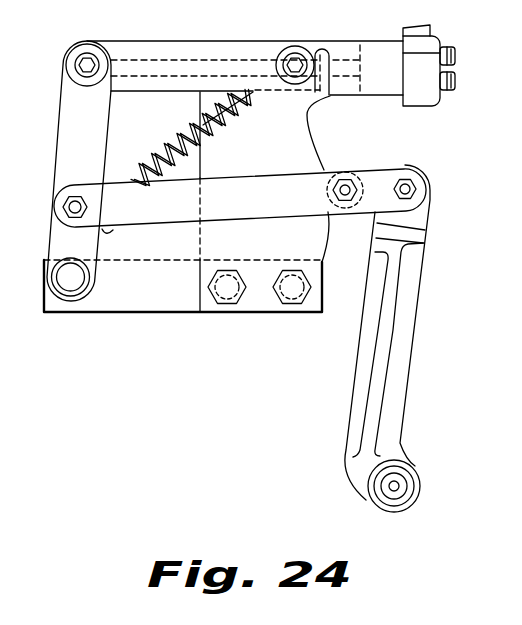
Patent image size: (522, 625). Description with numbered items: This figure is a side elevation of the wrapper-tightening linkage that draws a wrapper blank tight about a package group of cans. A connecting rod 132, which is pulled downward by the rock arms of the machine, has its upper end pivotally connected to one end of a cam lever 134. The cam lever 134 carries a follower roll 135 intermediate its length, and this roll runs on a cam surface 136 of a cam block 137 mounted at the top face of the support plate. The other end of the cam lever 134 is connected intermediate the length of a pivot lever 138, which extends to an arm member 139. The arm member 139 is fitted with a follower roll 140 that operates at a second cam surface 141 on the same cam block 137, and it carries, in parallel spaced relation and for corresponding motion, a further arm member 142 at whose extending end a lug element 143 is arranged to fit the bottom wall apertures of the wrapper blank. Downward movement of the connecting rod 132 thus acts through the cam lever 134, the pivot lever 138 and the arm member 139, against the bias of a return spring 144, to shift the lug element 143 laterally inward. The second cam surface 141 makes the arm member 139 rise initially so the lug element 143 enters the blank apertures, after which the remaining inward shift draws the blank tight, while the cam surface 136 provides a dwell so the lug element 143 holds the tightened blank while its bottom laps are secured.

The connecting rod 132 is at (410, 350).
The cam lever 134 is at (167, 228).
The follower roll 135 is at (367, 177).
The cam surface 136 is at (320, 148).
The cam block 137 is at (256, 300).
The pivot lever 138 is at (58, 128).
The arm member 139 is at (183, 40).
The follower roll 140 is at (283, 50).
The second cam surface 141 is at (265, 87).
The further arm member 142 is at (347, 28).
The lug element 143 is at (430, 25).
The return spring 144 is at (173, 147).